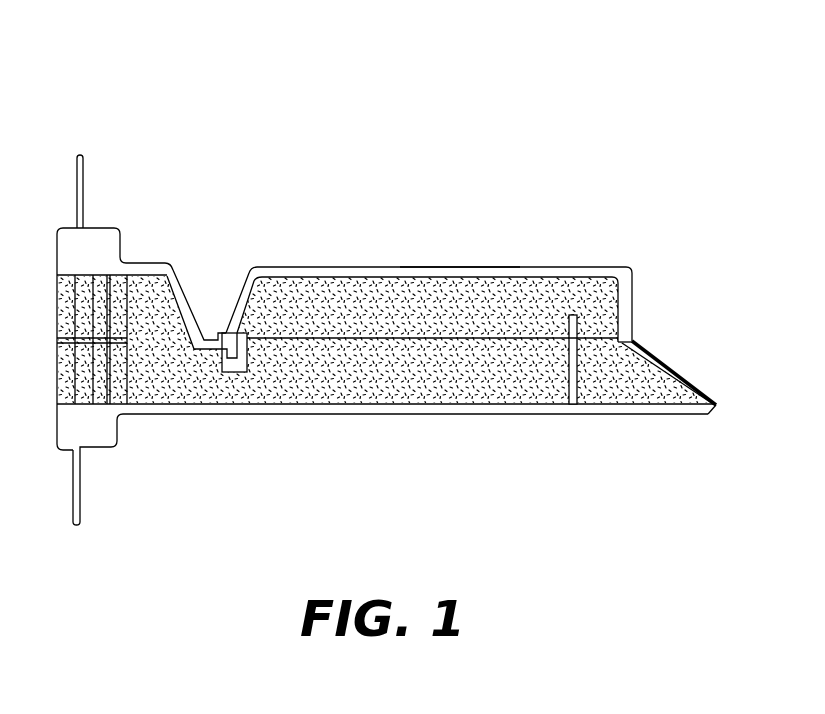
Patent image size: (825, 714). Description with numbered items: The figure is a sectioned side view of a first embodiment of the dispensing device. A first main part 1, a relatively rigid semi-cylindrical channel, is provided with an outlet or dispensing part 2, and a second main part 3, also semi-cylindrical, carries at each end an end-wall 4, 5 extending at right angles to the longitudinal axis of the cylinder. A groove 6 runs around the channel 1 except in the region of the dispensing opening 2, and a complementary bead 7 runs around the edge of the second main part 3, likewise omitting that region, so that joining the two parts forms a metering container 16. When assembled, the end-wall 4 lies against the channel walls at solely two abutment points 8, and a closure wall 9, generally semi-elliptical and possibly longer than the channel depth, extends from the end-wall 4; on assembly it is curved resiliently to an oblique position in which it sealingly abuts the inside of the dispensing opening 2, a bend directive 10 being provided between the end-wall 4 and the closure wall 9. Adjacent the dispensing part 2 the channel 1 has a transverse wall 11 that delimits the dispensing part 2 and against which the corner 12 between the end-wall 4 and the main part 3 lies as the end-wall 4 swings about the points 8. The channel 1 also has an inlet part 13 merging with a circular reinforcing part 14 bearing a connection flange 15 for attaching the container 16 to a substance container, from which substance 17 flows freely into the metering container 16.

The first main part 1 is at (518, 413).
The dispensing part 2 is at (710, 407).
The second main part 3 is at (522, 267).
The end-wall 4 is at (636, 290).
The end-wall 5 is at (242, 290).
The groove 6 is at (230, 368).
The bead 7 is at (226, 342).
The abutment point 8 is at (634, 338).
The closure wall 9 is at (673, 370).
The bend directive 10 is at (623, 348).
The transverse wall 11 is at (567, 375).
The corner 12 is at (633, 270).
The inlet part 13 is at (137, 413).
The reinforcing part 14 is at (57, 455).
The connection flange 15 is at (83, 187).
The metering container 16 is at (457, 262).
The substance 17 is at (368, 370).